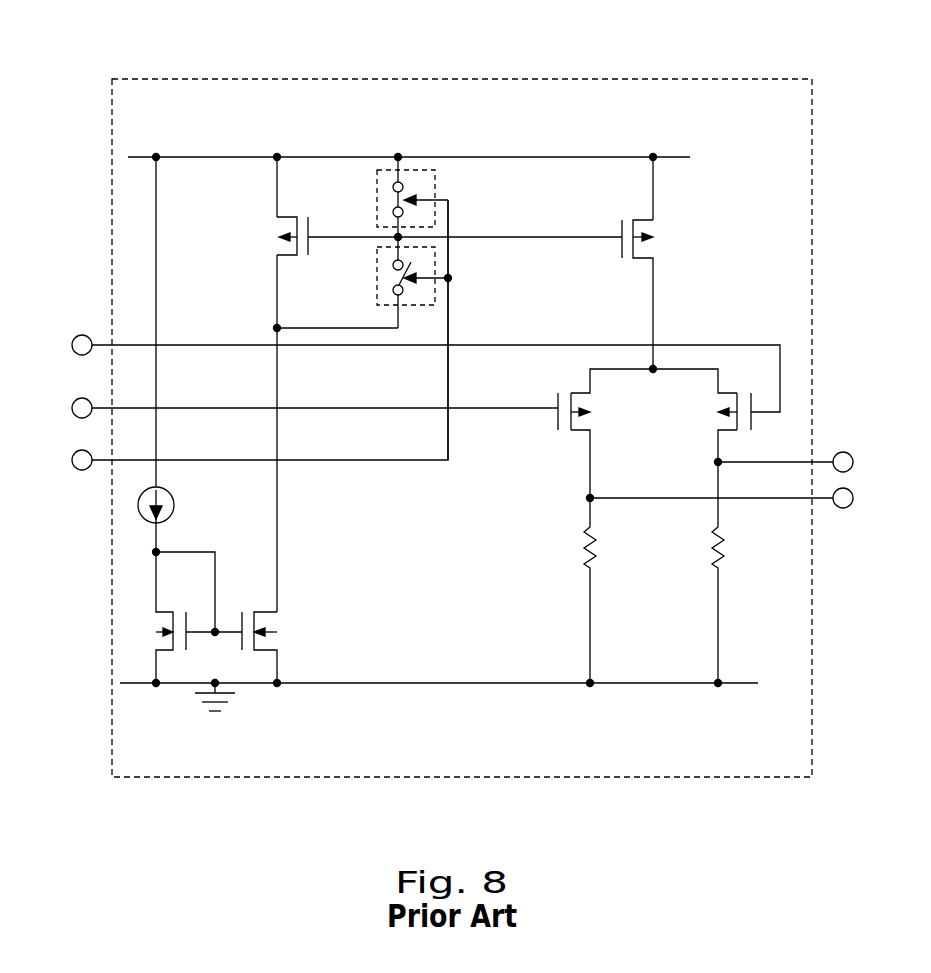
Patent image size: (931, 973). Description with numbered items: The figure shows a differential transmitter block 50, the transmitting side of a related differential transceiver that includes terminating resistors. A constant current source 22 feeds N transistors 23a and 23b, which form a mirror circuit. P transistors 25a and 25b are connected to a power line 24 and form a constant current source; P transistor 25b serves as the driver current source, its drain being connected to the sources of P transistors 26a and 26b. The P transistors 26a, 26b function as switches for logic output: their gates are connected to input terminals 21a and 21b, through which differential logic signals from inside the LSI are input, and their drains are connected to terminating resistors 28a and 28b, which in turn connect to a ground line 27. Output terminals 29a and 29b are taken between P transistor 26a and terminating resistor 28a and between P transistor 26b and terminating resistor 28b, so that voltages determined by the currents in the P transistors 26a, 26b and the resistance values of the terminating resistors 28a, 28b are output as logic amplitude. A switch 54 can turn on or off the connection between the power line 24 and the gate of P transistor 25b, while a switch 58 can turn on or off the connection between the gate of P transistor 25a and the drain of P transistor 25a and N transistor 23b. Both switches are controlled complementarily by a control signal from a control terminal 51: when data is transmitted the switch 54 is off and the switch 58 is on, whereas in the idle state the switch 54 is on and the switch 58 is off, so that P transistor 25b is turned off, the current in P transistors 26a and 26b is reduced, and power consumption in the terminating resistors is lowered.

The differential transmitter block 50 is at (655, 77).
The power line 24 is at (512, 157).
The input terminal 21a is at (73, 352).
The input terminal 21b is at (73, 415).
The control terminal 51 is at (73, 470).
The P transistor 25a is at (290, 217).
The P transistor 25b is at (650, 230).
The switch 54 is at (432, 193).
The switch 58 is at (433, 275).
The P transistor 26a is at (720, 427).
The P transistor 26b is at (562, 392).
The terminating resistor 28a is at (723, 553).
The terminating resistor 28b is at (598, 553).
The output terminal 29a is at (838, 452).
The output terminal 29b is at (847, 510).
The ground line 27 is at (440, 683).
The constant current source 22 is at (173, 500).
The N transistor 23a is at (165, 612).
The N transistor 23b is at (268, 620).